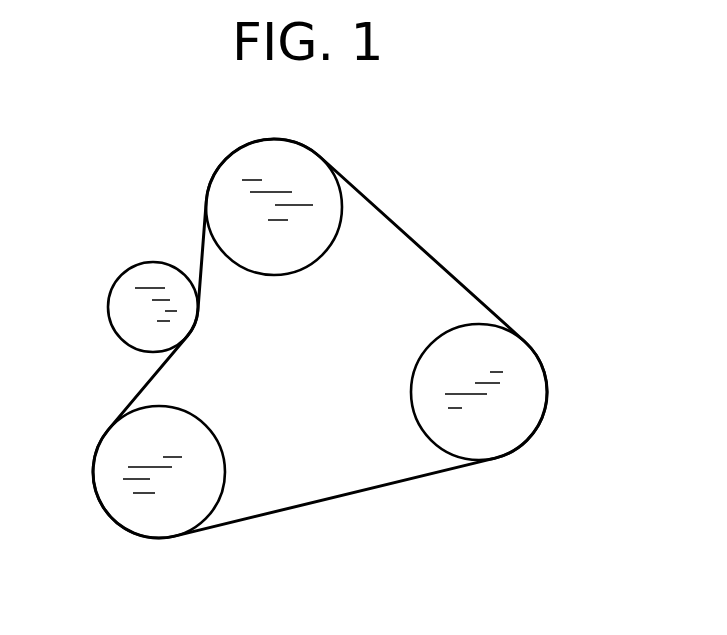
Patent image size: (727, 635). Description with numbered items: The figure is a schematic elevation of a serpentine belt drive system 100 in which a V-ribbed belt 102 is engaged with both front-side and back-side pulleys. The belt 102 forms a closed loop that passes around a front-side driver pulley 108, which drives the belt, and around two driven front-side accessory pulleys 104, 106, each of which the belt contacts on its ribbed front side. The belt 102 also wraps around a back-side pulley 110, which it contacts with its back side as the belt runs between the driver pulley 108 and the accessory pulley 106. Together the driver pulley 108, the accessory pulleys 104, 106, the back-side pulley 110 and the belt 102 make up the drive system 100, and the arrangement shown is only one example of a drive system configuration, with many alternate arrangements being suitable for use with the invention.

The serpentine belt drive system 100 is at (463, 228).
The V-ribbed belt 102 is at (404, 480).
The driven front-side accessory pulley 104 is at (523, 408).
The driven front-side accessory pulley 106 is at (304, 242).
The front-side driver pulley 108 is at (188, 438).
The back-side pulley 110 is at (128, 320).